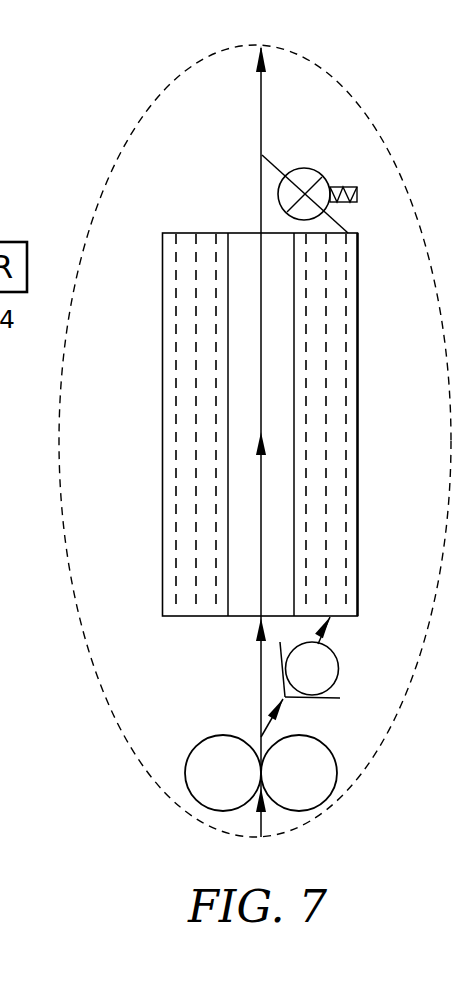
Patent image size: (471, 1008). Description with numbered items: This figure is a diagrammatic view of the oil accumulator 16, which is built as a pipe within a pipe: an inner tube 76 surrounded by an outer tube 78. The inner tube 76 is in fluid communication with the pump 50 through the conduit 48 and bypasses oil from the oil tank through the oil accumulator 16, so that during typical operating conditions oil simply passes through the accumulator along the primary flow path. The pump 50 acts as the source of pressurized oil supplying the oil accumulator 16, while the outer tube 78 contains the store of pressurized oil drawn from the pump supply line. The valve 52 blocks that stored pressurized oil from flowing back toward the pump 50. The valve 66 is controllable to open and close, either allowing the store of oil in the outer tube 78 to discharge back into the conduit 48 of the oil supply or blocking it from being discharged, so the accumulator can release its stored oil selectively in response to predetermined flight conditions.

The oil accumulator 16 is at (384, 66).
The conduit 48 is at (260, 834).
The pump 50 is at (205, 713).
The valve 52 is at (364, 672).
The valve 66 is at (302, 147).
The inner tube 76 is at (242, 211).
The outer tube 78 is at (174, 211).